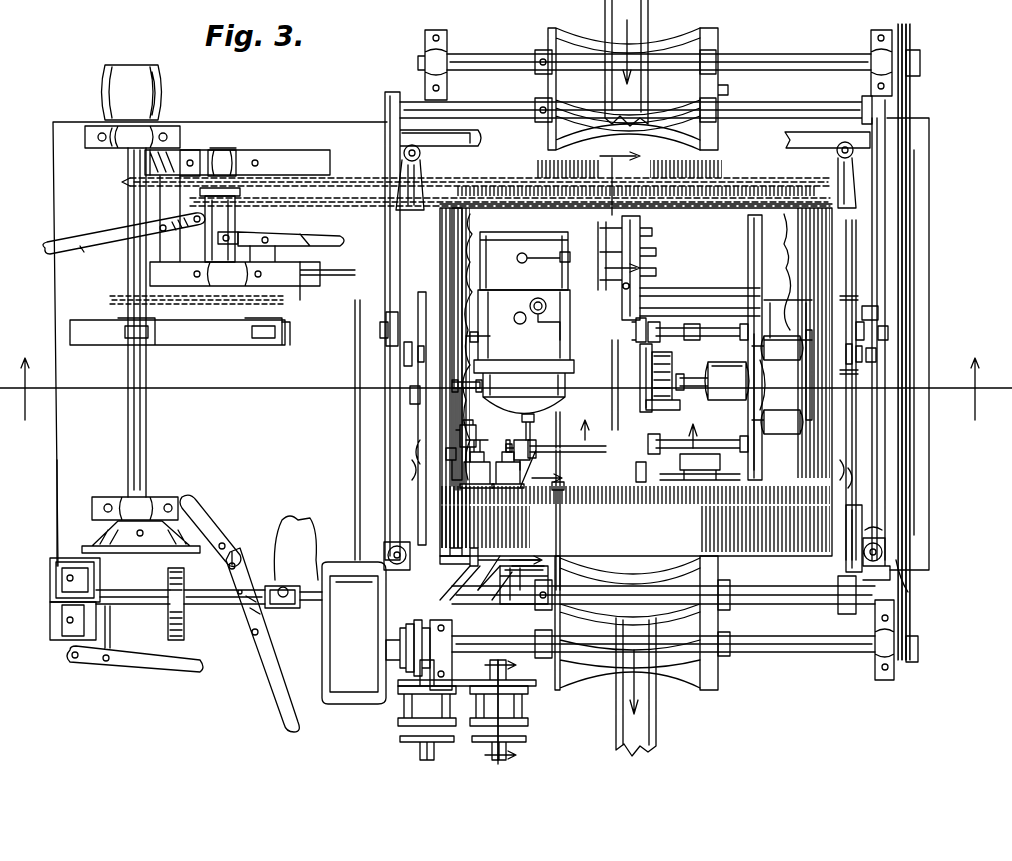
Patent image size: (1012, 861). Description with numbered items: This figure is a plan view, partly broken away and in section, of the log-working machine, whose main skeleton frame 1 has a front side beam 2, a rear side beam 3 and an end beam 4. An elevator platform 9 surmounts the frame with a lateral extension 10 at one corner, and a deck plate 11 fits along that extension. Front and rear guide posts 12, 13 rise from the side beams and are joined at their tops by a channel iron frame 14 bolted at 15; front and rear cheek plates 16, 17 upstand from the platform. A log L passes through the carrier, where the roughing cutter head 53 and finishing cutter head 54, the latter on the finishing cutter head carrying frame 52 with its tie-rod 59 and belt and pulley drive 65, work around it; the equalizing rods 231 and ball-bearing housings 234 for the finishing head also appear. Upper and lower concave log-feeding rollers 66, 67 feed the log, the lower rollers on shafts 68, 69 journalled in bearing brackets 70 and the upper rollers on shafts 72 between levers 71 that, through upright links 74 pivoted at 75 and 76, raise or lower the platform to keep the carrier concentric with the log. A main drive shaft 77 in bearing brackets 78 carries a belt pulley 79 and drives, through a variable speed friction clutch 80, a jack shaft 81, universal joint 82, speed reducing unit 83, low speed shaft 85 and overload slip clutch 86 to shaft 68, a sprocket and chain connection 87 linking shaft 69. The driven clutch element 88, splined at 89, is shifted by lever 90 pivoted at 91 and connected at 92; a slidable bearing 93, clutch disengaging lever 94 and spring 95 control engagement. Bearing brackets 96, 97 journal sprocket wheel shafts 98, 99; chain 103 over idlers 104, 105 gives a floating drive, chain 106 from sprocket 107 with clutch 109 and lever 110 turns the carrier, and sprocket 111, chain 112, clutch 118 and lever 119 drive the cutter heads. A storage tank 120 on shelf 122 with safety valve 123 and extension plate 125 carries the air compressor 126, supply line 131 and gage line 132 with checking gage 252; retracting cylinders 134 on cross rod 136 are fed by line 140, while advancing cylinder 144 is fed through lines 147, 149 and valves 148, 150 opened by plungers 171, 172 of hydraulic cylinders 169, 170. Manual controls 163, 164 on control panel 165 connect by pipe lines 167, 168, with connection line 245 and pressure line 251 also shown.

The main skeleton frame 1 is at (38, 187).
The front side beam 2 is at (295, 533).
The rear side beam 3 is at (268, 122).
The end beam 4 is at (506, 389).
The elevator platform 9 is at (355, 438).
The lateral extension 10 is at (300, 318).
The deck plate 11 is at (60, 466).
The front guide post 12 is at (388, 555).
The rear guide post 13 is at (404, 152).
The rectangular channel iron frame 14 is at (452, 134).
The bolts 15 is at (724, 535).
The front side cheek plate 16 is at (686, 550).
The rear side cheek plate 17 is at (756, 148).
The finishing cutter head carrying frame 52 is at (710, 470).
The roughing cutter head 53 is at (694, 272).
The finishing cutter head 54 is at (670, 360).
The rear cross tie-rod 59 is at (810, 396).
The belt and pulley drive 65 is at (790, 298).
The upper log-feeding roller 66 is at (718, 90).
The lower log-feeding roller 67 is at (712, 38).
The shaft 68 is at (820, 654).
The shaft 69 is at (790, 56).
The bearing bracket 70 is at (434, 30).
The horizontal lever 71 is at (398, 456).
The shaft 72 is at (770, 106).
The upright link 74 is at (388, 340).
The pivot 75 is at (406, 356).
The pivot 76 is at (382, 326).
The main drive shaft 77 is at (147, 456).
The bearing bracket 78 is at (95, 128).
The belt pulley 79 is at (160, 64).
The variable speed friction clutch 80 is at (184, 536).
The jack shaft 81 is at (268, 614).
The universal joint 82 is at (284, 586).
The speed reducing unit 83 is at (318, 642).
The low speed shaft 85 is at (384, 650).
The overload slip clutch 86 is at (416, 668).
The sprocket and chain connection 87 is at (912, 88).
The driven clutch element 88 is at (184, 632).
The spline 89 is at (140, 602).
The clutch shift lever 90 is at (272, 686).
The pivot 91 is at (222, 540).
The operative connection 92 is at (236, 598).
The slidable bearing 93 is at (62, 606).
The clutch disengaging lever 94 is at (128, 660).
The spring 95 is at (100, 572).
The bearing bracket 96 is at (292, 158).
The bearing bracket 97 is at (286, 268).
The upper sprocket wheel shaft 98 is at (222, 150).
The lower sprocket wheel shaft 99 is at (192, 150).
The sprocket chain 103 is at (180, 337).
The idler sprocket wheel 104 is at (110, 300).
The idler sprocket wheel 105 is at (290, 318).
The sprocket chain 106 is at (345, 181).
The sprocket wheel 107 is at (205, 204).
The clutch 109 is at (240, 228).
The clutch shift lever 110 is at (335, 236).
The sprocket wheel 111 is at (165, 162).
The sprocket chain 112 is at (308, 196).
The clutch 118 is at (200, 191).
The clutch shift lever 119 is at (92, 248).
The compressed air storage tank 120 is at (482, 250).
The shelf 122 is at (470, 283).
The safety valve 123 is at (490, 324).
The extension plate 125 is at (632, 350).
The air compressor 126 is at (515, 236).
The pressure supply line 131 is at (552, 256).
The pressure gage line 132 is at (558, 344).
The pneumatic retracting cylinders 134 is at (795, 396).
The cross rod 136 is at (752, 238).
The pressure supply line 140 is at (732, 287).
The pneumatic advancing cylinder 144 is at (724, 370).
The pressure supply line 147 is at (476, 400).
The air supply control valve 148 is at (476, 426).
The pressure supply line 149 is at (528, 420).
The air supply control valve 150 is at (512, 442).
The manual control 163 is at (400, 722).
The manual control 164 is at (528, 720).
The control panel 165 is at (532, 684).
The pipe line 167 is at (478, 524).
The pipe line 168 is at (512, 614).
The hydraulic cylinder 169 is at (470, 490).
The hydraulic cylinder 170 is at (504, 488).
The plunger 171 is at (446, 456).
The plunger 172 is at (548, 452).
The equalizing rod 231 is at (706, 320).
The ball-bearing housing 234 is at (636, 324).
The connection line 245 is at (462, 566).
The pressure line 251 is at (548, 585).
The checking pressure gage 252 is at (528, 306).
The log L is at (656, 2).